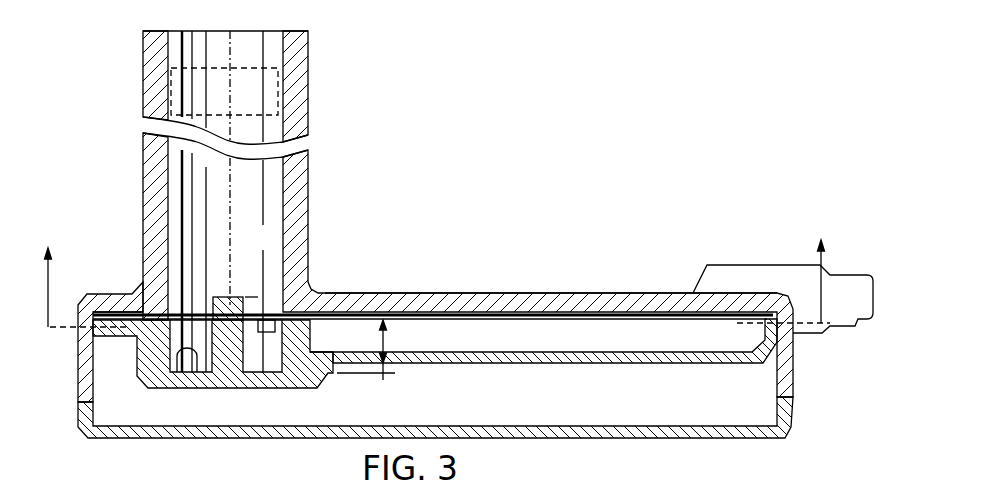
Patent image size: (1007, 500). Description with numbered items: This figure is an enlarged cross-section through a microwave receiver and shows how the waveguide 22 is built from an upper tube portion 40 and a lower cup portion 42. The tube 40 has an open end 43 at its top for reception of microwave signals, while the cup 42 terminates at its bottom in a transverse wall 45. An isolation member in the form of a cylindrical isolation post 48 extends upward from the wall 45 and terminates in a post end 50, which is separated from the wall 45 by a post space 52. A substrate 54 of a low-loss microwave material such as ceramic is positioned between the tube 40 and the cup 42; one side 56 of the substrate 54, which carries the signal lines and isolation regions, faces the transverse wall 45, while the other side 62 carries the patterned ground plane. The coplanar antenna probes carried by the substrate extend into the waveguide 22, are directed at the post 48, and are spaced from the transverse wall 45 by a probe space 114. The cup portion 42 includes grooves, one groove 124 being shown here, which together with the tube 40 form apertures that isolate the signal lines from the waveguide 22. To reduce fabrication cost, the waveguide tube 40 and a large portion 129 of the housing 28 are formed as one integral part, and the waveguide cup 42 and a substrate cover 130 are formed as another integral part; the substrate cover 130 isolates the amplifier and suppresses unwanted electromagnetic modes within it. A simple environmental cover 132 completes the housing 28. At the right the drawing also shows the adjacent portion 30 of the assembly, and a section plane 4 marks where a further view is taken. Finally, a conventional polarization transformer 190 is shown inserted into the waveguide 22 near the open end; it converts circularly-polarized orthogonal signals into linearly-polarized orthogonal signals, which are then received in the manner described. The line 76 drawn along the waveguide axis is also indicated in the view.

The section plane 4- 4 is at (436, 269).
The waveguide 22 is at (202, 94).
The housing 28 is at (418, 216).
The nozzle 30 is at (857, 326).
The tube portion 40 is at (143, 178).
The cup portion 42 is at (405, 334).
The open end 43 is at (283, 184).
The transverse wall 45 is at (187, 372).
The isolation post 48 is at (213, 307).
The post end 50 is at (215, 296).
The post space 52 is at (252, 290).
The substrate 54 is at (607, 330).
The side of the substrate 56 is at (472, 318).
The another side of the substrate 62 is at (443, 310).
The stem 76 is at (163, 232).
The probe space 114 is at (380, 367).
The groove 124 is at (270, 348).
The large portion of the housing 129 is at (555, 292).
The substrate cover 130 is at (687, 363).
The environmental cover 132 is at (735, 438).
The polarization transformer 190 is at (268, 68).